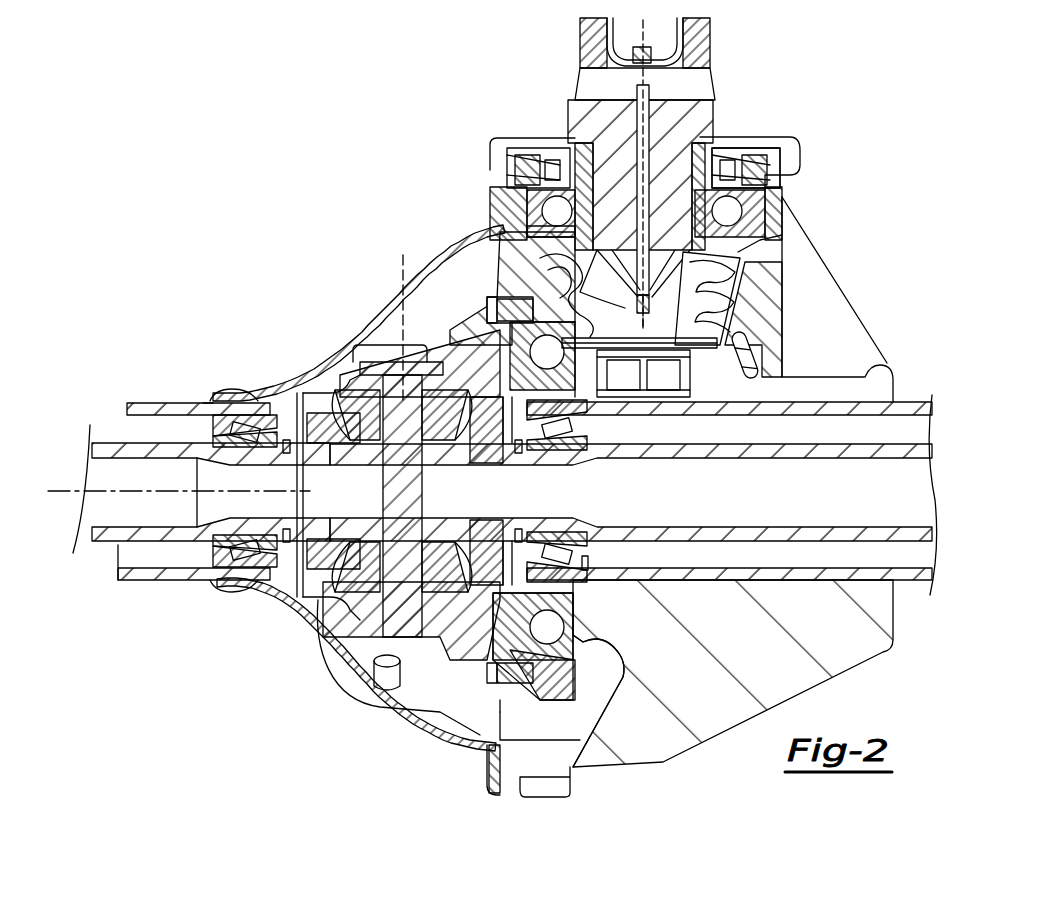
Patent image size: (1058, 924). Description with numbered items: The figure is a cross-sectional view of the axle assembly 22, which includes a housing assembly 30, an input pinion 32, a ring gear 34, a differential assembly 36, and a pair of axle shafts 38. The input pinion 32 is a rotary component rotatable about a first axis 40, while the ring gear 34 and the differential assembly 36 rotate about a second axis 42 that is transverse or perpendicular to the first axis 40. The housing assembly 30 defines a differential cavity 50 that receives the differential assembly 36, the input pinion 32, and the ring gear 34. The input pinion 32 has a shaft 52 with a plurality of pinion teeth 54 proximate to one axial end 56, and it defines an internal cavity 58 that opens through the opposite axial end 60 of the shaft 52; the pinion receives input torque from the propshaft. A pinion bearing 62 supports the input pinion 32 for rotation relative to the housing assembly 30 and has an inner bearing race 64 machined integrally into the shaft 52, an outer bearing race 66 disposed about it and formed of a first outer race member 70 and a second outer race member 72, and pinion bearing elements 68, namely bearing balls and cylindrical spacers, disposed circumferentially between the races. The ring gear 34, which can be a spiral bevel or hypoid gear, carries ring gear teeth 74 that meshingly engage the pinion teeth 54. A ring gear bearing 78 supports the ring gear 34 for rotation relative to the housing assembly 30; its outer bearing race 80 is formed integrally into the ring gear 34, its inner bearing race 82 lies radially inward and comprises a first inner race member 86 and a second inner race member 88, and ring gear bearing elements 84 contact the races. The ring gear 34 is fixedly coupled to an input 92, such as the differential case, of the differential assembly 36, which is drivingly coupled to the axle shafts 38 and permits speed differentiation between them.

The axle assembly 22 is at (264, 307).
The housing assembly 30 is at (826, 298).
The input pinion 32 is at (531, 200).
The ring gear 34 is at (507, 240).
The differential assembly 36 is at (355, 345).
The axle shafts 38 is at (840, 452).
The first axis 40 is at (663, 42).
The second axis 42 is at (122, 490).
The differential cavity 50 is at (477, 257).
The shaft 52 is at (583, 178).
The pinion teeth 54 is at (583, 297).
The axial end 56 is at (655, 393).
The internal cavity 58 is at (660, 268).
The opposite axial end 60 is at (585, 145).
The pinion bearing 62 is at (912, 107).
The inner bearing race 64 is at (703, 152).
The outer bearing race 66 is at (763, 206).
The pinion bearing elements 68 is at (745, 180).
The first outer race member 70 is at (527, 200).
The second outer race member 72 is at (530, 222).
The ring gear teeth 74 is at (576, 262).
The ring gear bearing 78 is at (350, 725).
The outer bearing race 80 is at (610, 613).
The inner bearing race 82 is at (518, 625).
The ring gear bearing elements 84 is at (524, 656).
The first inner race member 86 is at (570, 600).
The second inner race member 88 is at (588, 563).
The input 92 is at (363, 623).